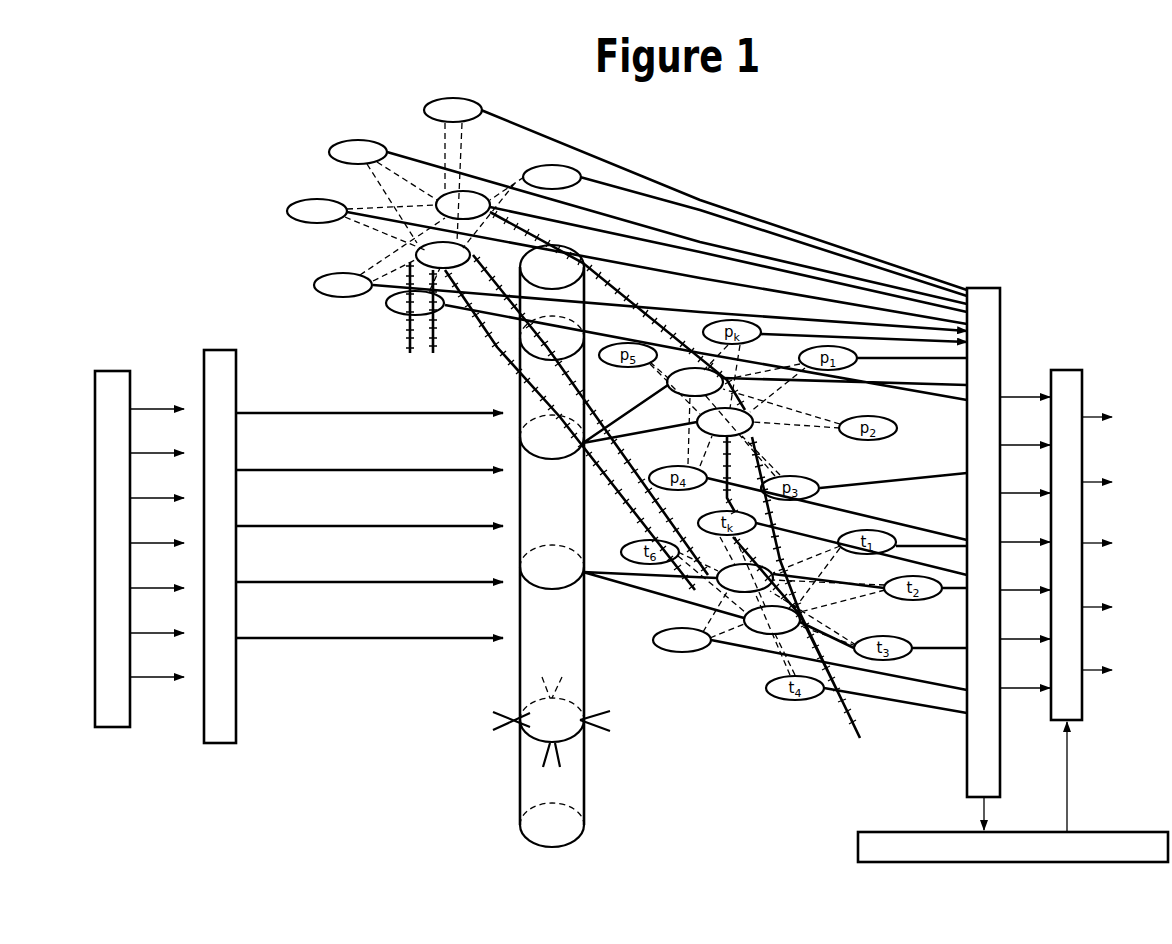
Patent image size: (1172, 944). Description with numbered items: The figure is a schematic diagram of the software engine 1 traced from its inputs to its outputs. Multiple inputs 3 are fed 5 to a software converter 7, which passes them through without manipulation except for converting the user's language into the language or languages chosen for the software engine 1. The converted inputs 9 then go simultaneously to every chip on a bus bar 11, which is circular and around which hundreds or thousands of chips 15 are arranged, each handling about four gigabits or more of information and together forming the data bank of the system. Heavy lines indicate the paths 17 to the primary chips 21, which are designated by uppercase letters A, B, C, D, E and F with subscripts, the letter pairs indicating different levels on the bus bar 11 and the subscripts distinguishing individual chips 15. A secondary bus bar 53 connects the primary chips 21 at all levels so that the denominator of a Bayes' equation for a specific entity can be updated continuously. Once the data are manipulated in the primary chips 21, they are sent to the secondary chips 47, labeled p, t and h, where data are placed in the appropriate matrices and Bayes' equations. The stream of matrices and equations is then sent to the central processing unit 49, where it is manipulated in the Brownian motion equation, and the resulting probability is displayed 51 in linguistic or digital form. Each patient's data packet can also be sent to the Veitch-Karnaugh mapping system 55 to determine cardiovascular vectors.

The software engine 1 is at (360, 803).
The multiple inputs 3 is at (118, 720).
The feeding of inputs 5 is at (148, 409).
The software converter 7 is at (220, 718).
The inputs 9 is at (313, 413).
The bus bar 11 is at (537, 793).
The chips 15 is at (322, 242).
The paths 17 is at (604, 578).
The primary chips 21 is at (478, 190).
The secondary chips 47 is at (288, 211).
The central processing unit 49 is at (985, 293).
The output display 51 is at (1067, 370).
The secondary bus bar 53 is at (840, 705).
The Veitch-Karnaugh mapping system 55 is at (877, 830).